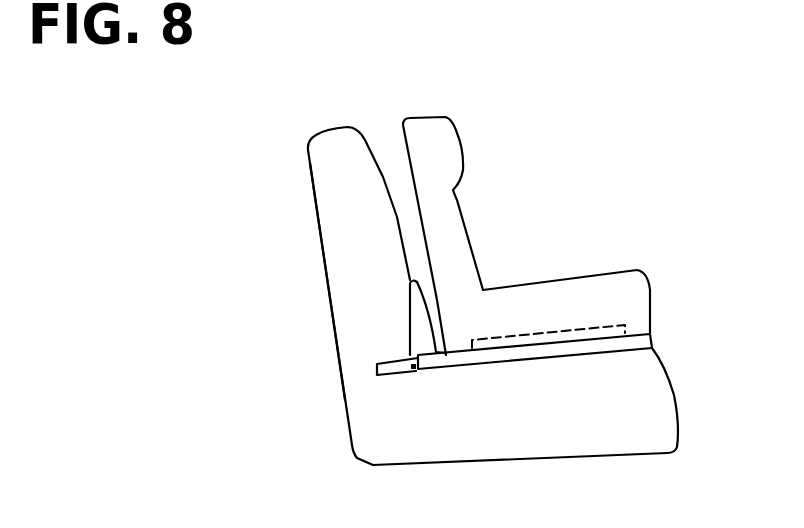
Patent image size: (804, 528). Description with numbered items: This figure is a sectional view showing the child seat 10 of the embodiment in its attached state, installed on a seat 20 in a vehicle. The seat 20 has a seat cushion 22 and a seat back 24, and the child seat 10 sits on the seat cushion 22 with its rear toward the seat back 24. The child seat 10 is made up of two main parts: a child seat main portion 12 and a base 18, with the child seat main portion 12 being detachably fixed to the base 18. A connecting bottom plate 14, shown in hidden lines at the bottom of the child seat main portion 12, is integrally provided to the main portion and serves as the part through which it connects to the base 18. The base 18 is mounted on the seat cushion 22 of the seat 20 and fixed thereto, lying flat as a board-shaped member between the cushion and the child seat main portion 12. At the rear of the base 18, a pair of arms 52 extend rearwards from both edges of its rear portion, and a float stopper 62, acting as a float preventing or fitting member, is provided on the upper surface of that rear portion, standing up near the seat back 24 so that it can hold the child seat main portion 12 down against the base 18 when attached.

The child seat 10 is at (523, 253).
The child seat main portion 12 is at (653, 300).
The connecting bottom plate 14 is at (572, 330).
The base 18 is at (472, 358).
The seat 20 is at (338, 122).
The seat cushion 22 is at (542, 422).
The seat back 24 is at (333, 205).
The arms 52 is at (388, 378).
The float stopper 62 is at (410, 302).